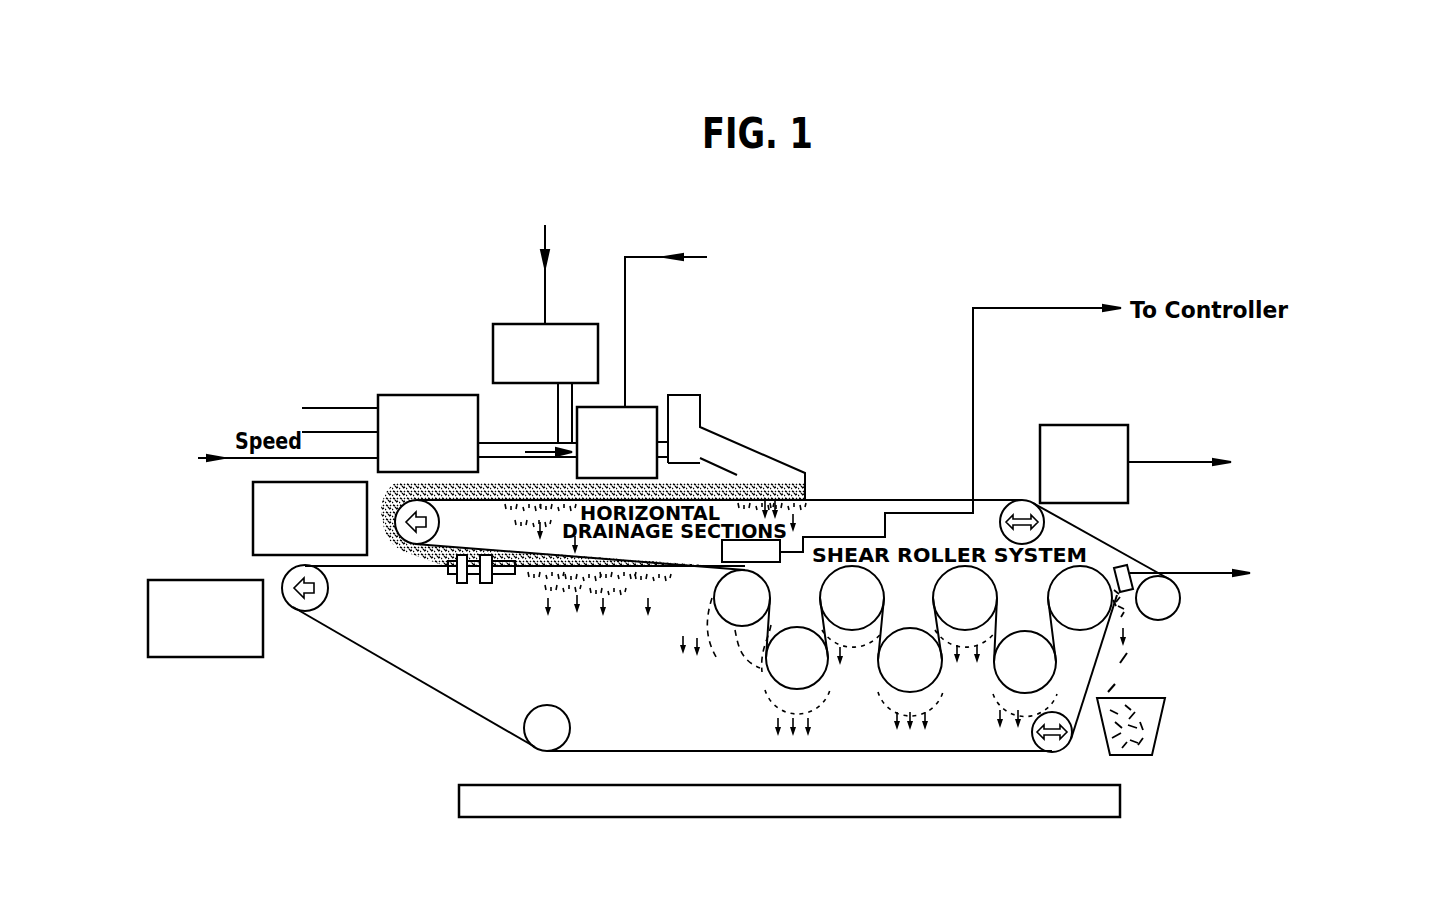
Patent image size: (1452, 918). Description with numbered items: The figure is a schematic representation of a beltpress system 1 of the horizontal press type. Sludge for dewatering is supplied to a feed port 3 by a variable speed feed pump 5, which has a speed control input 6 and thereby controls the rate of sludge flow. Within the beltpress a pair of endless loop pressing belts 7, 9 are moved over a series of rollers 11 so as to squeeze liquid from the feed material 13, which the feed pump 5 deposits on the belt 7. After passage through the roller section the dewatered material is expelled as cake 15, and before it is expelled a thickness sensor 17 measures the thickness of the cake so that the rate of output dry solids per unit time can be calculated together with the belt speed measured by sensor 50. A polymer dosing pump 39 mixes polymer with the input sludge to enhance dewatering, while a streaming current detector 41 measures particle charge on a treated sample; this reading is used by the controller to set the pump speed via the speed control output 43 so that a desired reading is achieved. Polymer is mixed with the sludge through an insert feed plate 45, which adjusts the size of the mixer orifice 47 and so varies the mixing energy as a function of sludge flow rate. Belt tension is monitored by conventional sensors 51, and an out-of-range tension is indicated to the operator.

The beltpress system 1 is at (1083, 385).
The feed port 3 is at (365, 419).
The variable speed feed pump 5 is at (413, 394).
The speed control input 6 is at (357, 461).
The endless loop pressing belt 7 is at (843, 499).
The endless loop pressing belt 9 is at (330, 564).
The shear rollers 11 is at (766, 662).
The feed material 13 is at (398, 566).
The cake 15 is at (1124, 620).
The thickness sensor 17 is at (1133, 568).
The polymer dosing pump 39 is at (563, 325).
The streaming current detector 41 is at (720, 569).
The speed control output 43 is at (545, 298).
The insert feed plate 45 is at (633, 407).
The mixer orifice 47 is at (560, 451).
The belt speed sensor 50 is at (1128, 437).
The belt tension sensor 51 is at (253, 515).